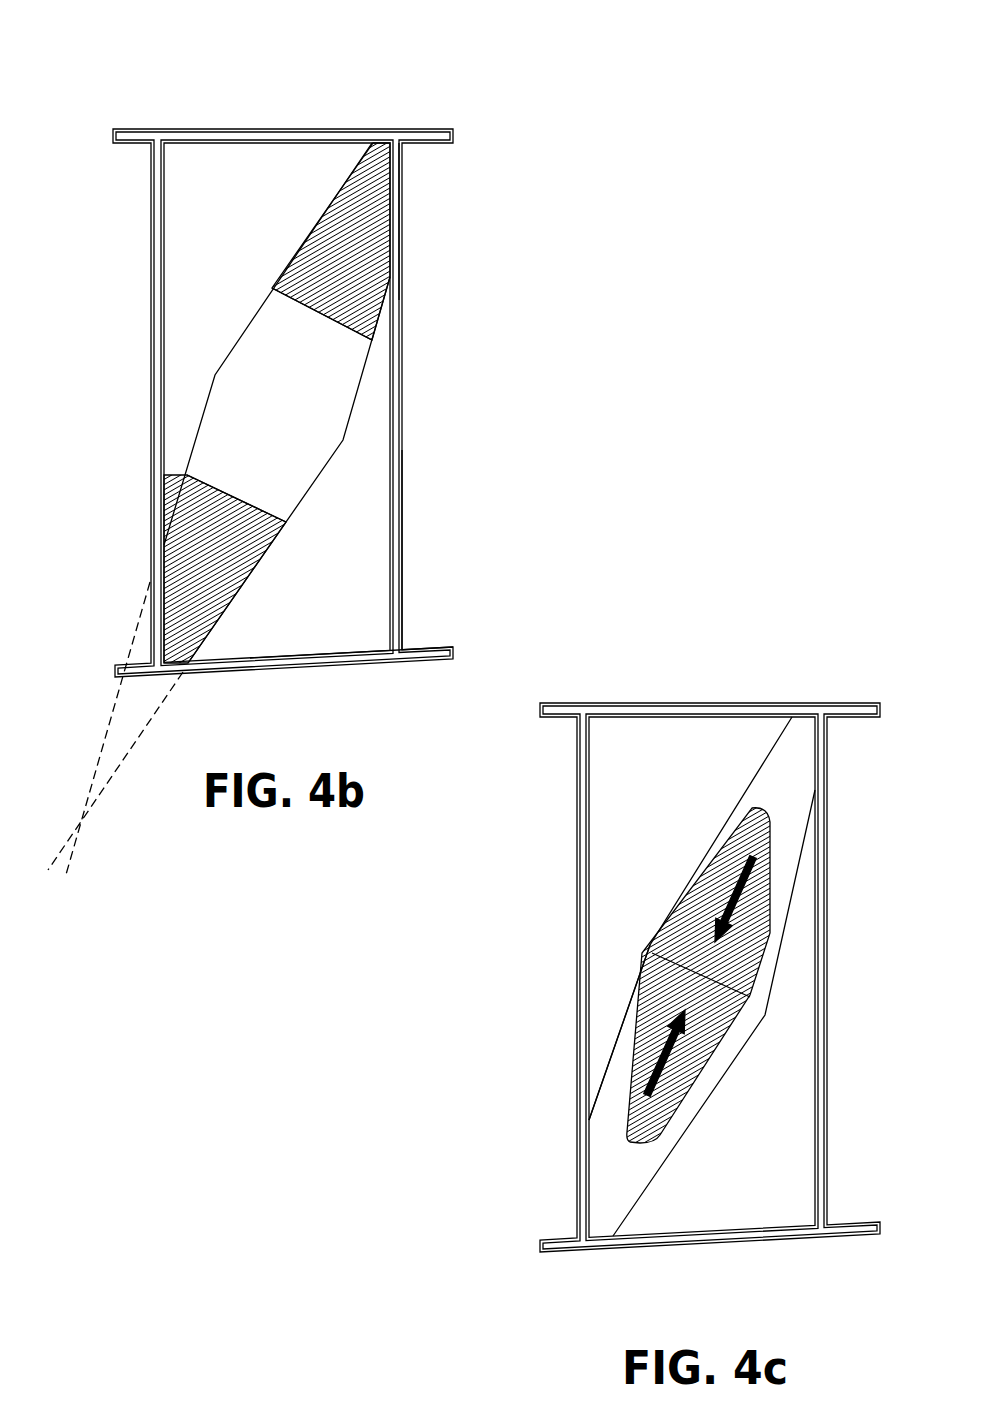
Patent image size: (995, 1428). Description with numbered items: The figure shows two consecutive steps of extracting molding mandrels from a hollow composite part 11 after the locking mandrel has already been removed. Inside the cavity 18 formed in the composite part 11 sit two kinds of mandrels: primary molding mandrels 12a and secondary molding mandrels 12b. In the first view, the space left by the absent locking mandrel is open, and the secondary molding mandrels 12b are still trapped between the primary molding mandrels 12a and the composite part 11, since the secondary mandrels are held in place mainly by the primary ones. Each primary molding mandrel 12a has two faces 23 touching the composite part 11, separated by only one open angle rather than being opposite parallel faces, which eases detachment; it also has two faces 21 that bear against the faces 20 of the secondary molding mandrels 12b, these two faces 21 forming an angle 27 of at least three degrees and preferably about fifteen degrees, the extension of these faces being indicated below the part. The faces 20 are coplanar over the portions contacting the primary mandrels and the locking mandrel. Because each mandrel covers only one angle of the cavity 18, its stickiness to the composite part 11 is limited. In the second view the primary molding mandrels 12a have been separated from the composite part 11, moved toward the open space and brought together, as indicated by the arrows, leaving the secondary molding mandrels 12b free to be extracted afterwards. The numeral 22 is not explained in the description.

In FIG. 4b, the composite part 11 is at (268, 129).
In FIG. 4c, the composite part 11 is at (680, 703).
In FIG. 4b, the primary molding mandrels 12a is at (210, 545).
In FIG. 4c, the primary molding mandrels 12a is at (647, 1043).
In FIG. 4b, the secondary molding mandrels 12b is at (253, 193).
In FIG. 4c, the secondary molding mandrels 12b is at (693, 742).
In FIG. 4c, the cavity 18 is at (598, 1165).
In FIG. 4b, the faces of the secondary molding mandrels 20 is at (258, 302).
In FIG. 4c, the faces of the secondary molding mandrels 20 is at (807, 887).
In FIG. 4b, the faces of the primary molding mandrels 21 is at (383, 310).
In FIG. 4b, the flange 22 is at (398, 580).
In FIG. 4b, the faces in contact with the composite part 23 is at (393, 183).
In FIG. 4b, the angle 27 is at (97, 790).